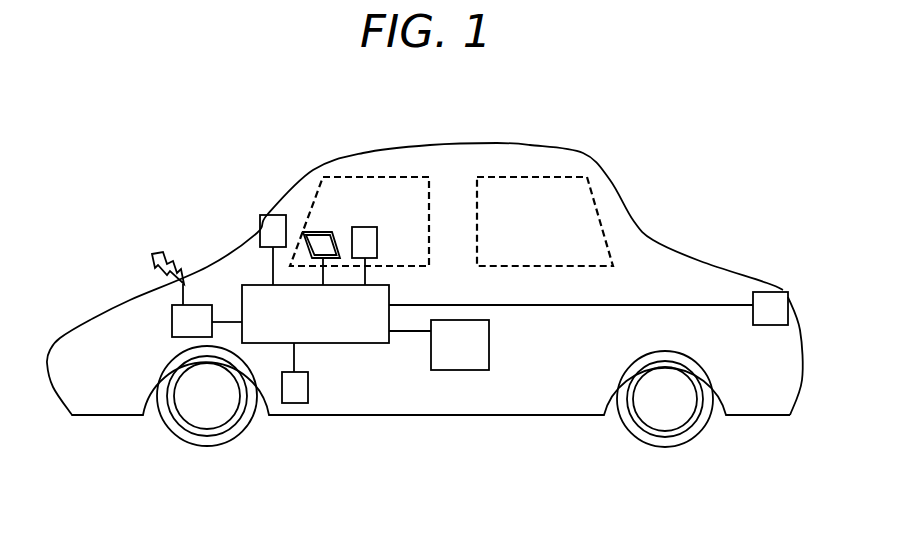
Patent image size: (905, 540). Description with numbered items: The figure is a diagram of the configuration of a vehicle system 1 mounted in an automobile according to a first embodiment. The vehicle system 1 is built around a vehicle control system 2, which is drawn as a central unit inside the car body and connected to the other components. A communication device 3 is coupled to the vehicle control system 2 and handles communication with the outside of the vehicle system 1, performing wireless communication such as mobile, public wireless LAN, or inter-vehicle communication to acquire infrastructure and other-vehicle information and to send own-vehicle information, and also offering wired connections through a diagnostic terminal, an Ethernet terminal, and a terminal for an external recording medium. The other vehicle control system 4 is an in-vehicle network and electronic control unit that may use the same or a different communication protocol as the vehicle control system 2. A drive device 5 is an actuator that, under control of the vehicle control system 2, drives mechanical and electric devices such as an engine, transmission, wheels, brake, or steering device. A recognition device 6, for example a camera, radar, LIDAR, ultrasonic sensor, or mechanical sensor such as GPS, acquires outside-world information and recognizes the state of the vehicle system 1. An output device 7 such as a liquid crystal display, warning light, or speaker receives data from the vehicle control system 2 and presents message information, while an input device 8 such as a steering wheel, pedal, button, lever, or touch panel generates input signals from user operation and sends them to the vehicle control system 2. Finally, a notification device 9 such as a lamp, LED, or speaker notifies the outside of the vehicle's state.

The vehicle system 1 is at (411, 147).
The vehicle control system 2 is at (358, 345).
The communication device 3 is at (198, 304).
The other vehicle control system 4 is at (465, 370).
The drive device 5 is at (292, 403).
The recognition device 6 is at (268, 213).
The output device 7 is at (325, 230).
The input device 8 is at (363, 227).
The notification device 9 is at (770, 292).